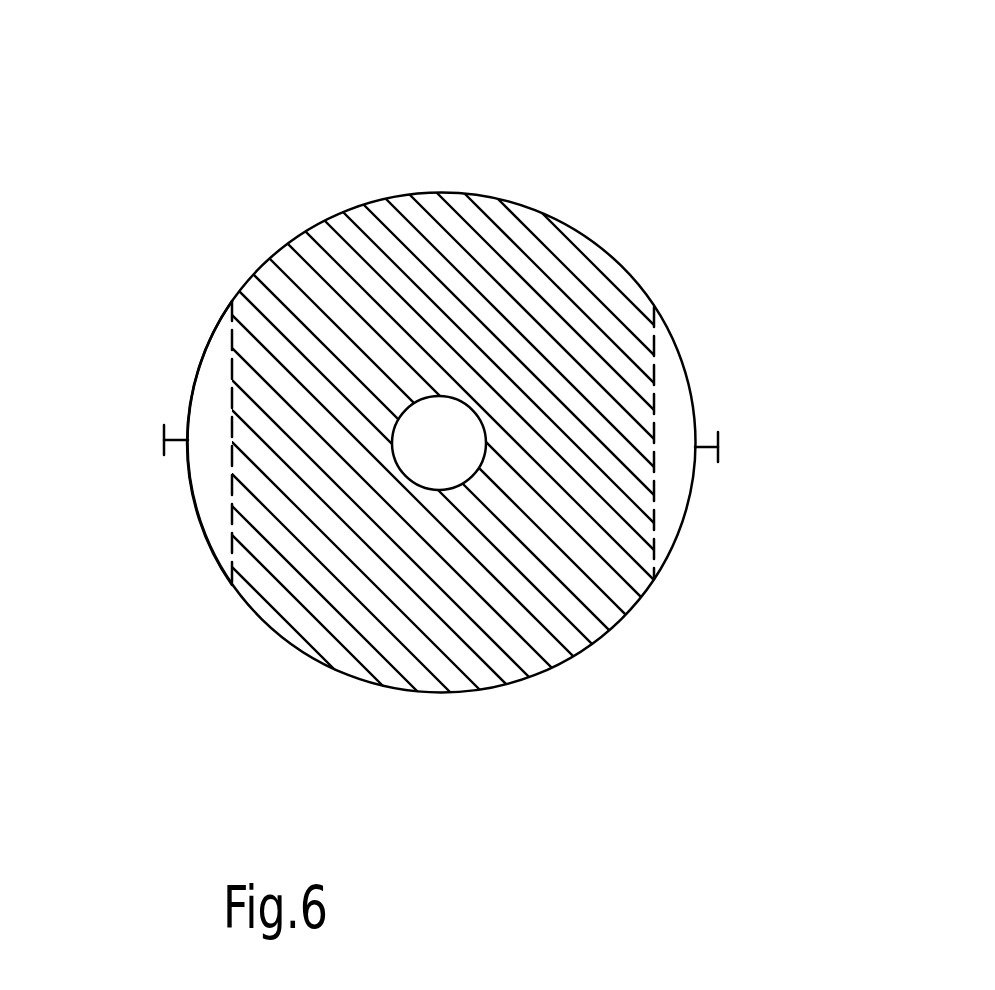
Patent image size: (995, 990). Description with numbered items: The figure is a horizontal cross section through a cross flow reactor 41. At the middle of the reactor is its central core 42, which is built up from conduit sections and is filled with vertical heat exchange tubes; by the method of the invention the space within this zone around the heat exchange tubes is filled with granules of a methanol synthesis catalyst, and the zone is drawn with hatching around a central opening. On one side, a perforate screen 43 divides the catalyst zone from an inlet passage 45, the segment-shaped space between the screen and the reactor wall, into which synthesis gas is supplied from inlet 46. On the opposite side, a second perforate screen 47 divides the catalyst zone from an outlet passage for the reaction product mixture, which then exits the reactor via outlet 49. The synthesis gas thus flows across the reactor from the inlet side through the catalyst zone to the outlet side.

The cross flow reactor 41 is at (457, 192).
The central core 42 is at (483, 462).
The perforate screen 43 is at (232, 487).
The inlet passage 45 is at (212, 360).
The inlet 46 is at (172, 438).
The perforate screen 47 is at (657, 370).
The outlet 49 is at (708, 462).